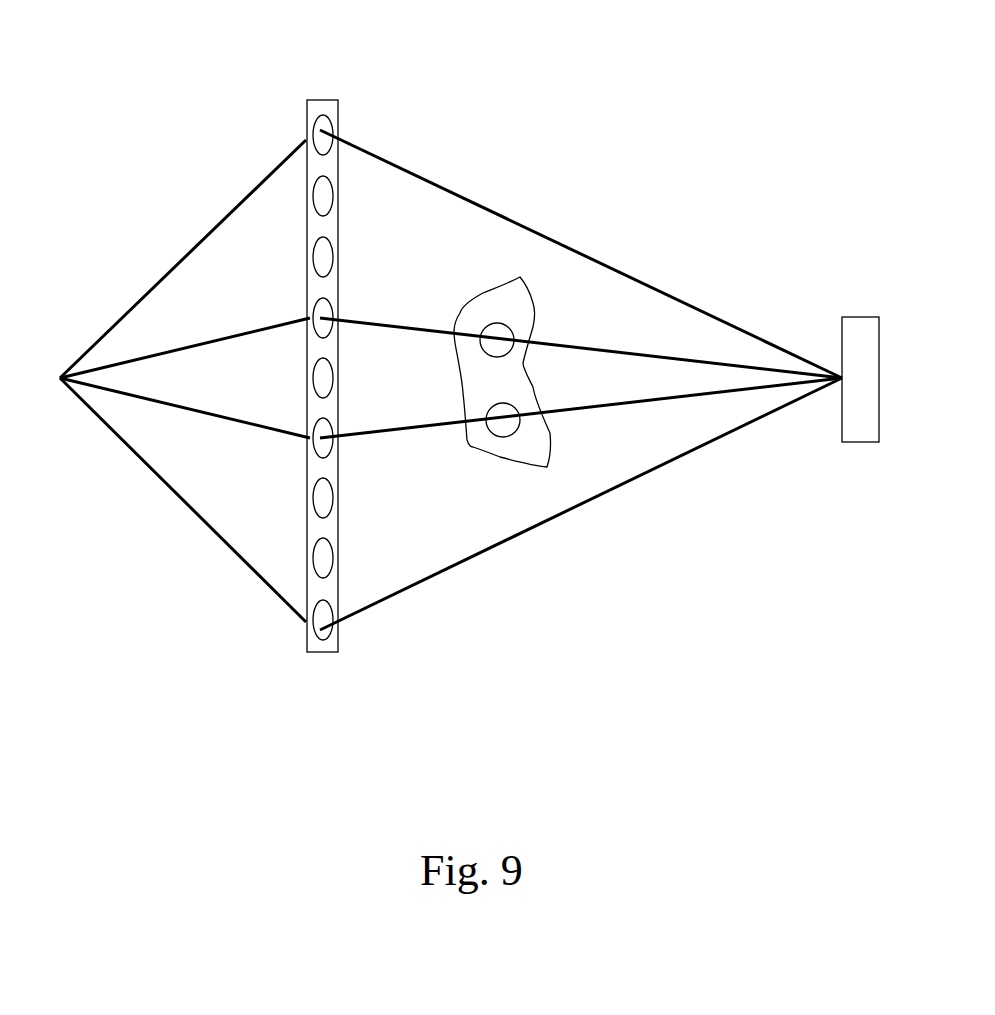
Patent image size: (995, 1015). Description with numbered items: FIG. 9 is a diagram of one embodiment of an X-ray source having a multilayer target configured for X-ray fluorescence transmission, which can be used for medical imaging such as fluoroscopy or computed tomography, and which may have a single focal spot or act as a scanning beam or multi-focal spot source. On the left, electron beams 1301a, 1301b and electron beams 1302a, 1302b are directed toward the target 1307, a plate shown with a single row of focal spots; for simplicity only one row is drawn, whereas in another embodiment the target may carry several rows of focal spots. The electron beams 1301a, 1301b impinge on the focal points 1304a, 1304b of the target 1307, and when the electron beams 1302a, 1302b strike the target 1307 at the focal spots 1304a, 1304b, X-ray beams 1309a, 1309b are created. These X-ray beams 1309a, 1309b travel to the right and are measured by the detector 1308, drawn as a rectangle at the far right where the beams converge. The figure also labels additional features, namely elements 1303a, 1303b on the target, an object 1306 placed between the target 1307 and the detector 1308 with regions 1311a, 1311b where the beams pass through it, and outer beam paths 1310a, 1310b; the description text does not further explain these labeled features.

The electron beam 1301a is at (88, 348).
The electron beam 1301b is at (83, 410).
The electron beam 1302a is at (160, 352).
The electron beam 1302b is at (160, 405).
The upper aperture 1303a is at (308, 130).
The lower aperture 1303b is at (307, 640).
The focal point 1304a is at (328, 303).
The focal point 1304b is at (328, 453).
The sample / scattering object 1306 is at (525, 277).
The target 1307 is at (330, 100).
The detector 1308 is at (860, 317).
The X-ray beam 1309a is at (618, 350).
The X-ray beam 1309b is at (637, 482).
The first outer transmitted light ray 1310a is at (713, 312).
The second outer transmitted light ray 1310b is at (715, 445).
The first region of interest 1311a is at (490, 323).
The second region of interest 1311b is at (498, 437).